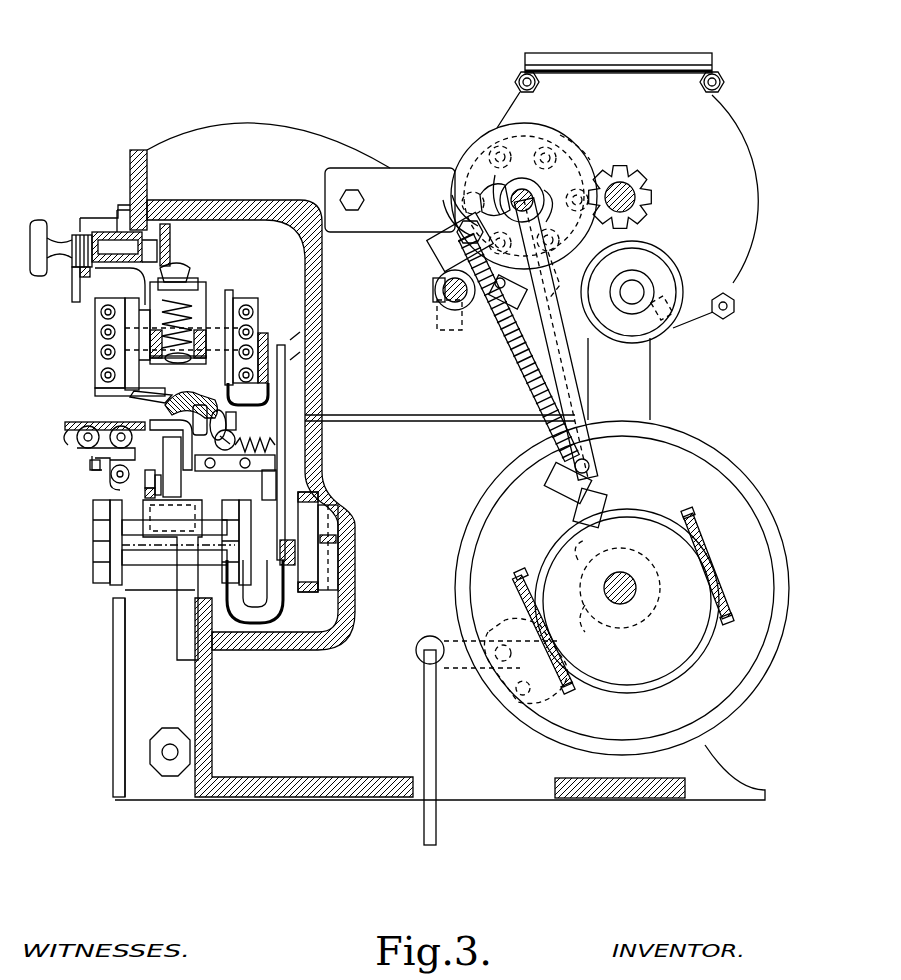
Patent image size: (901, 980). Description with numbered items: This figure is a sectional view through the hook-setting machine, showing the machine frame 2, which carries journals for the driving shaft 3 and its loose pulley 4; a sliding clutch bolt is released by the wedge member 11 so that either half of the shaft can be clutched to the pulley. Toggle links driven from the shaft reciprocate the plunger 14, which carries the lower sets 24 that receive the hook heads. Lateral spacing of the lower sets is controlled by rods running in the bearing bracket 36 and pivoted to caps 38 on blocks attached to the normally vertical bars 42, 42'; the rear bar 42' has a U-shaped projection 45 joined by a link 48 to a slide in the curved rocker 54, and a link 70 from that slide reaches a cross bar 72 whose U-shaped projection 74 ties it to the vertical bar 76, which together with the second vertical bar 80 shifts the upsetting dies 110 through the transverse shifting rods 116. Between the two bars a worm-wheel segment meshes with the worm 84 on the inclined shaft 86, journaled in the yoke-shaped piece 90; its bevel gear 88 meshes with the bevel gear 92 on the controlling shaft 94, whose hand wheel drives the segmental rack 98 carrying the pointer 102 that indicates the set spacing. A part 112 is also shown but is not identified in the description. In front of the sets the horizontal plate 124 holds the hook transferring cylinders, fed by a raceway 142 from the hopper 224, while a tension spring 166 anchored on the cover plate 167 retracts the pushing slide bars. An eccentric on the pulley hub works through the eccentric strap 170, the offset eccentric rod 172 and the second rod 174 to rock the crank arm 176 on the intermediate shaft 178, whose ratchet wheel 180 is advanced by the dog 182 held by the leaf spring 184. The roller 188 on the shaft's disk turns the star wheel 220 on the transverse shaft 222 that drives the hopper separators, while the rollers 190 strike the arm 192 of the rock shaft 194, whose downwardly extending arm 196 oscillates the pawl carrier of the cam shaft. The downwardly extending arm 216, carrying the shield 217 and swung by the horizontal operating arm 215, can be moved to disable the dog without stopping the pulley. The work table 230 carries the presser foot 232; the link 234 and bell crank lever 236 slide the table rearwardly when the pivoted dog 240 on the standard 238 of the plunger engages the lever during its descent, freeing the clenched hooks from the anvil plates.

The machine frame 2 is at (727, 793).
The driving shaft 3 is at (628, 580).
The loose pulley 4 is at (695, 432).
The wedge member 11 is at (548, 555).
The reciprocatory plunger 14 is at (142, 590).
The lower set 24 is at (168, 452).
The bearing bracket 36 is at (37, 228).
The cap 38 is at (95, 550).
The normally vertical bar 42 is at (146, 569).
The rear bar 42' is at (189, 567).
The U-shaped projection 45 is at (252, 618).
The link 48 is at (293, 557).
The curved rocker 54 is at (328, 587).
The link 70 is at (285, 400).
The cross bar 72 is at (267, 340).
The U-shaped projection 74 is at (230, 395).
The vertical bar 76 is at (238, 307).
The second vertical bar 80 is at (118, 377).
The worm 84 is at (163, 327).
The inclined shaft 86 is at (167, 363).
The bevel gear 88 is at (187, 270).
The yoke-shaped piece 90 is at (203, 293).
The bevel gear 92 is at (168, 230).
The controlling shaft 94 is at (110, 247).
The segmental rack 98 is at (88, 273).
The pointer 102 is at (113, 210).
The upsetting dies 110 is at (150, 414).
The lever 112 is at (163, 392).
The transverse shifting rods 116 is at (97, 355).
The horizontal plate 124 is at (263, 475).
The raceway 142 is at (303, 368).
The tension spring 166 is at (300, 437).
The cover plate 167 is at (288, 460).
The eccentric strap 170 is at (697, 650).
The offset eccentric rod 172 is at (502, 135).
The second rod 174 is at (535, 388).
The crank arm 176 is at (503, 200).
The intermediate shaft 178 is at (527, 198).
The ratchet wheel 180 is at (545, 172).
The dog 182 is at (498, 185).
The leaf spring 184 is at (463, 217).
The roller 188 is at (587, 157).
The rollers 190 is at (540, 240).
The arm 192 is at (445, 205).
The rock shaft 194 is at (445, 295).
The downwardly extending arm 196 is at (445, 325).
The horizontal operating arm 215 is at (433, 421).
The downwardly extending arm 216 is at (645, 333).
The shield 217 is at (456, 245).
The star wheel 220 is at (633, 175).
The transverse shaft 222 is at (637, 197).
The hopper 224 is at (710, 120).
The work table 230 is at (77, 425).
The presser foot 232 is at (182, 410).
The link 234 is at (78, 445).
The bell crank lever 236 is at (118, 458).
The standard 238 is at (142, 488).
The pivoted dog 240 is at (143, 495).